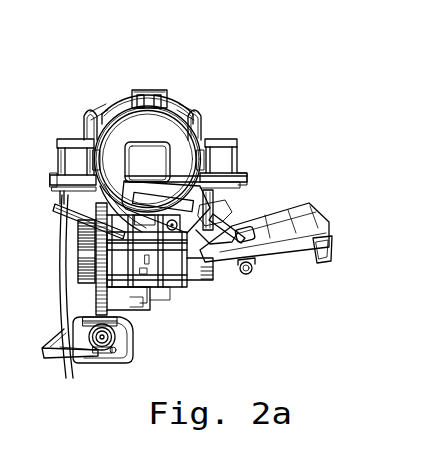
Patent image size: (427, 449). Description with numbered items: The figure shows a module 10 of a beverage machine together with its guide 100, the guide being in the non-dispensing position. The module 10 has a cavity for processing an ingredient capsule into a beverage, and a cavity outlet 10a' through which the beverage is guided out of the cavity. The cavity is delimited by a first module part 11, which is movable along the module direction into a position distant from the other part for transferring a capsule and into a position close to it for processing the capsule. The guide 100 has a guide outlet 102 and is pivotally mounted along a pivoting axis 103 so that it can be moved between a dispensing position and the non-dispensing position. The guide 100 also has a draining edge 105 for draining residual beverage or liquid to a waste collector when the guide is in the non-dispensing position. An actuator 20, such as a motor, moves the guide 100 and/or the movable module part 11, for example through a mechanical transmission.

The module 10 is at (260, 49).
The first module part 11 is at (178, 150).
The cavity outlet 10a' is at (253, 185).
The guide 100 is at (302, 218).
The guide outlet 102 is at (318, 263).
The pivoting axis 103 is at (245, 272).
The draining edge 105 is at (178, 278).
The actuator 20 is at (120, 345).